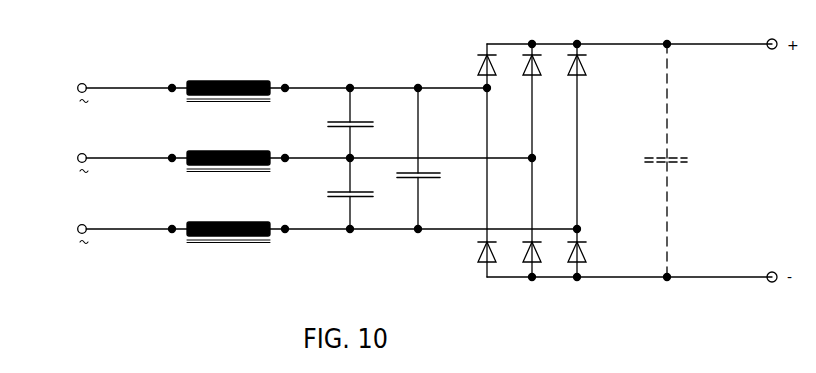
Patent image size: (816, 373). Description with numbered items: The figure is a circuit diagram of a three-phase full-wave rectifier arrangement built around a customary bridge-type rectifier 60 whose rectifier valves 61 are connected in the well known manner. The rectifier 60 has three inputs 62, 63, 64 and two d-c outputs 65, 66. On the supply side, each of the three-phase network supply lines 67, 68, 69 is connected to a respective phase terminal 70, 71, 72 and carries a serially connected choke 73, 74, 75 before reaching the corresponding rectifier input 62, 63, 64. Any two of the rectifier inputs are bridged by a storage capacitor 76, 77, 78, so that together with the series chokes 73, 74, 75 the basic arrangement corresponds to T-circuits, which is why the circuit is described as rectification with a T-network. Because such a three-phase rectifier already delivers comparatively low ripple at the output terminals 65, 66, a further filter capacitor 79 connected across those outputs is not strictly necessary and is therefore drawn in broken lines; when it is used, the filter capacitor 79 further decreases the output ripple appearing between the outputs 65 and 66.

The bridge-type rectifier 60 is at (586, 161).
The rectifier valves 61 is at (583, 62).
The rectifier input 62 is at (486, 91).
The rectifier input 63 is at (531, 162).
The rectifier input 64 is at (579, 229).
The d-c output 65 is at (578, 43).
The d-c output 66 is at (576, 281).
The three-phase network supply line 67 is at (312, 87).
The three-phase network supply line 68 is at (309, 157).
The three-phase network supply line 69 is at (308, 228).
The phase terminal 70 is at (82, 83).
The phase terminal 71 is at (82, 153).
The phase terminal 72 is at (82, 224).
The choke D 73 is at (215, 81).
The choke D 74 is at (220, 151).
The choke D 75 is at (217, 222).
The storage capacitor C1 76 is at (355, 128).
The storage capacitor C1 77 is at (357, 198).
The storage capacitor C1 78 is at (437, 171).
The filter capacitor C2 79 is at (670, 157).